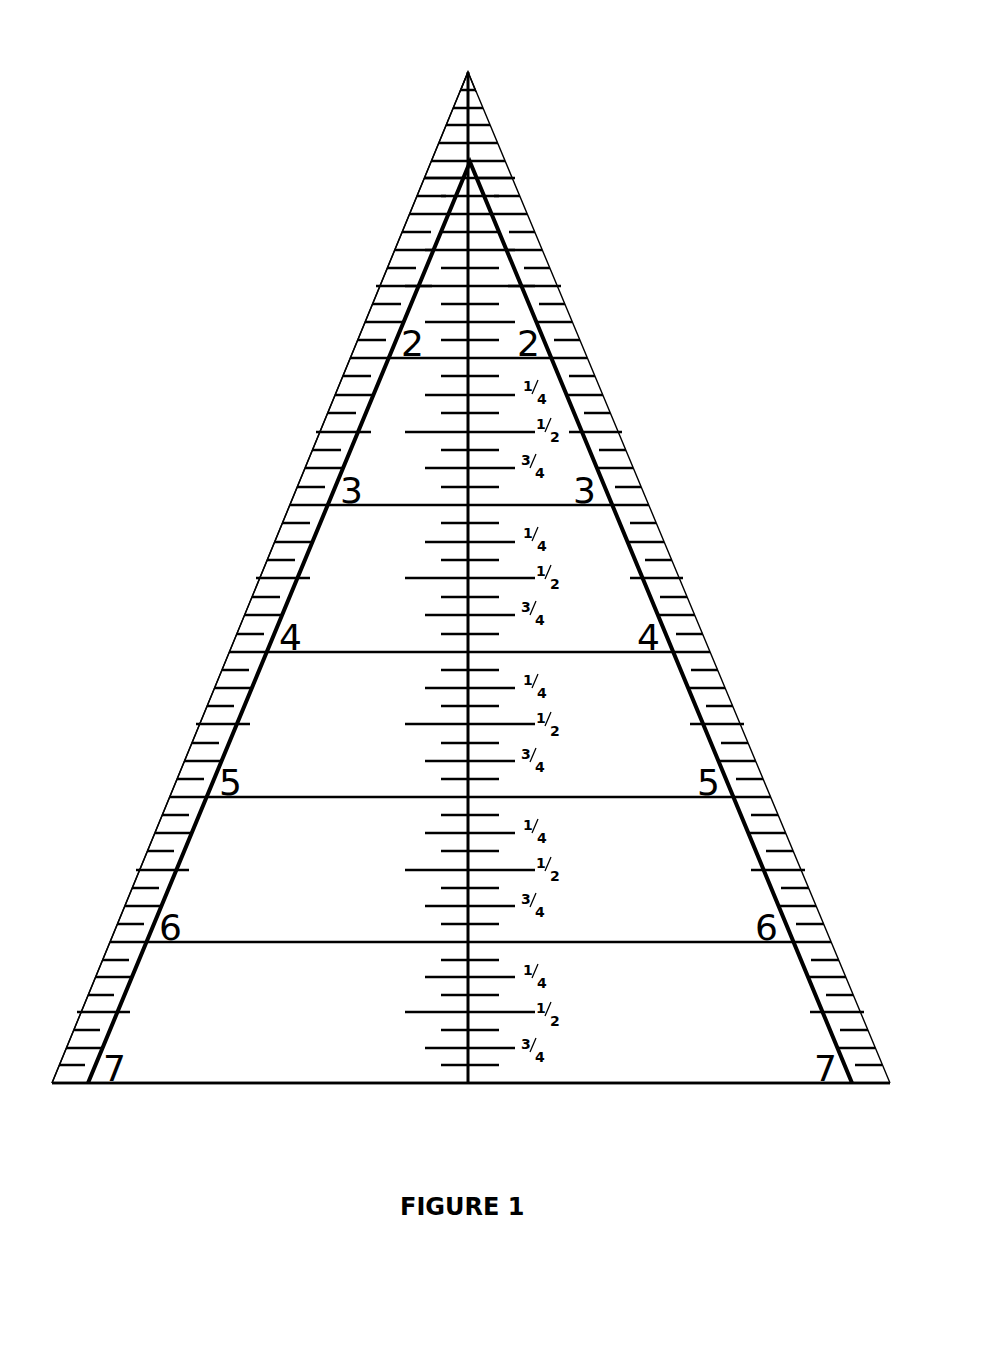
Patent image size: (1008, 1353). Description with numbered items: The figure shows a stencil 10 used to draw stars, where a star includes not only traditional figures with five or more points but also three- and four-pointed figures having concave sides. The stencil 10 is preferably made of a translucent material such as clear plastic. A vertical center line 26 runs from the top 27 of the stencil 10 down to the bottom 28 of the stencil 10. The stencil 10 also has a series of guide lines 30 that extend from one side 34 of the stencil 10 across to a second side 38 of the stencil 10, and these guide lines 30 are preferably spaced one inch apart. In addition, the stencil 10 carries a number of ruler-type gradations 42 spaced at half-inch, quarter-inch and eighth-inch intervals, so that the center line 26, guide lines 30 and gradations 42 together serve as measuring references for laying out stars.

The stencil 10 is at (255, 345).
The vertical center line 26 is at (472, 522).
The top 27 is at (523, 55).
The bottom 28 is at (275, 1085).
The guide lines 30 is at (400, 508).
The side 34 is at (278, 500).
The second side 38 is at (713, 640).
The ruler-type gradations 42 is at (737, 687).